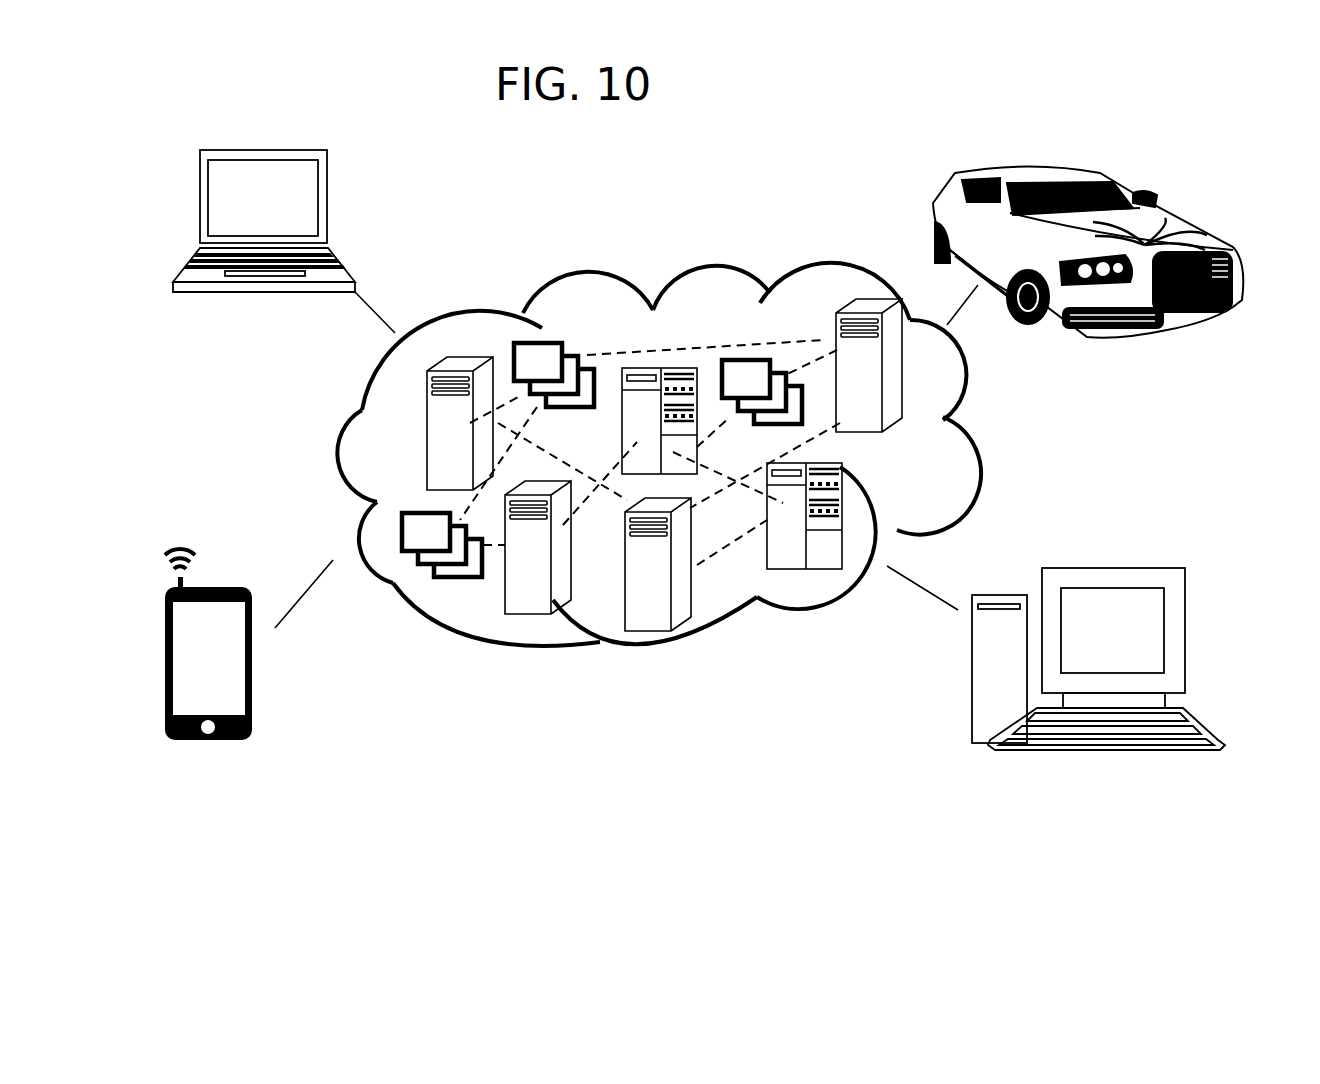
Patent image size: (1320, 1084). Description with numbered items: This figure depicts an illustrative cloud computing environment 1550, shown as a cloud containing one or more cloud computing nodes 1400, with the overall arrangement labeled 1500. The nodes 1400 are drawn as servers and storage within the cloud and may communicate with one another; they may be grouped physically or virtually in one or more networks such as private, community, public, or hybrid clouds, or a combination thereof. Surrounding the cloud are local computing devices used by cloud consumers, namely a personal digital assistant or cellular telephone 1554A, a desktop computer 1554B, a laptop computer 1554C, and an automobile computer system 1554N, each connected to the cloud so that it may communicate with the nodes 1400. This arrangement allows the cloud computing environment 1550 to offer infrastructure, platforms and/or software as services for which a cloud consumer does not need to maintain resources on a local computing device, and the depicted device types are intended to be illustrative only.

The system 1500 is at (1127, 100).
The cloud computing environment 1550 is at (1000, 437).
The cloud computing nodes 1400 is at (922, 469).
The personal digital assistant or cellular telephone 1554A is at (277, 693).
The desktop computer 1554B is at (997, 665).
The laptop computer 1554C is at (340, 225).
The automobile computer system 1554N is at (923, 203).